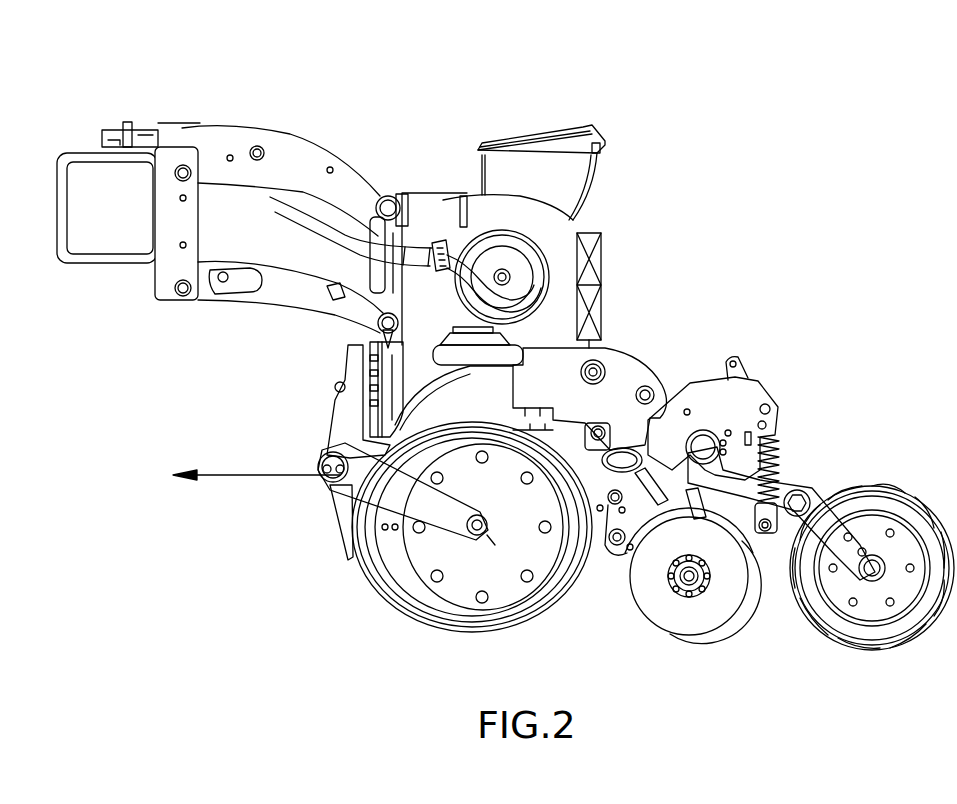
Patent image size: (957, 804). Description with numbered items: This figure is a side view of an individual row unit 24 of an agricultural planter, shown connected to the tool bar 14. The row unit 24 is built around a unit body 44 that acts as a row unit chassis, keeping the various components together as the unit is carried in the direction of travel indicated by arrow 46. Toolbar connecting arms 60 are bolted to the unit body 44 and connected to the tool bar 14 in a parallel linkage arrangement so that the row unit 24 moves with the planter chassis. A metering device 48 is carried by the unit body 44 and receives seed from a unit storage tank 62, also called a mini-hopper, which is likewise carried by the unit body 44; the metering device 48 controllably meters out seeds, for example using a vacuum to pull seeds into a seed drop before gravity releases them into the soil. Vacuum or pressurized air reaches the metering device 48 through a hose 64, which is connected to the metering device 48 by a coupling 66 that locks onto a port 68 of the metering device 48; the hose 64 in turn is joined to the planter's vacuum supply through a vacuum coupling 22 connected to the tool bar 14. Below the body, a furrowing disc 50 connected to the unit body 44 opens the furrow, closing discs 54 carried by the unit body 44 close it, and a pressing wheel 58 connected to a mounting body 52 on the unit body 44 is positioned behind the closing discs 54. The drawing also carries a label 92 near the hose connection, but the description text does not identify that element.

The tool bar 14 is at (73, 154).
The vacuum coupling 22 is at (104, 125).
The row unit 24 is at (681, 100).
The unit body 44 is at (630, 366).
The direction of travel arrow 46 is at (232, 475).
The metering device 48 is at (556, 280).
The furrowing disc 50 is at (425, 612).
The mounting body 52 is at (757, 385).
The closing discs 54 is at (650, 625).
The pressing wheel 58 is at (895, 492).
The toolbar connecting arms 60 is at (300, 147).
The unit storage tank 62 is at (558, 130).
The hose 64 is at (225, 124).
The coupling 66 is at (432, 250).
The port 68 is at (465, 262).
The tube coupler 92 is at (442, 250).